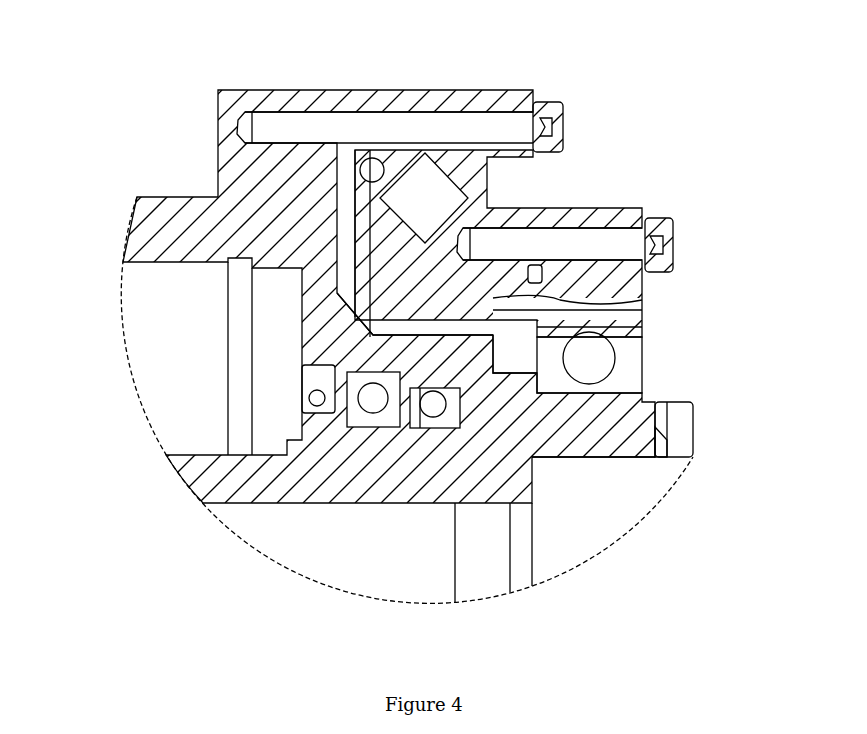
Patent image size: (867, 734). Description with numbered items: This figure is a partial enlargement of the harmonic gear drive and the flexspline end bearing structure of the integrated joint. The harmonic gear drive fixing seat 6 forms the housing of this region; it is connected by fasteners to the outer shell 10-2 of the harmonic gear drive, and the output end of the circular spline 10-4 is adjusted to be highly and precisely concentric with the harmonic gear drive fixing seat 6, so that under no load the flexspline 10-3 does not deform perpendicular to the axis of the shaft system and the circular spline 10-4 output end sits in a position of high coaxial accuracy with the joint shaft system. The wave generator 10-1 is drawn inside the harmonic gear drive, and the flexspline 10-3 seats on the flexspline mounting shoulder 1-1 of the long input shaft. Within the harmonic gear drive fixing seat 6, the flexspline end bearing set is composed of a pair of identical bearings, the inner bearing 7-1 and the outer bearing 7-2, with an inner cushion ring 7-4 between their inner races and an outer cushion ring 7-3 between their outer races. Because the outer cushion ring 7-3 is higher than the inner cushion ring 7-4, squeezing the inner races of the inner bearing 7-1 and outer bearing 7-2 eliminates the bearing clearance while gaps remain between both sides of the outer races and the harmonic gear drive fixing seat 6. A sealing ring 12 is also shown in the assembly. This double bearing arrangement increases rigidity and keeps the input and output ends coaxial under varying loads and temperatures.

The harmonic gear drive fixing seat 6 is at (243, 193).
The outer shell 10-2 is at (433, 100).
The circular spline 10-4 is at (597, 215).
The flexspline 10-3 is at (563, 310).
The wave generator 10-1 is at (628, 328).
The flexspline mounting shoulder 1-1 is at (568, 403).
The inner bearing of the flexspline end bearing set 7-1 is at (370, 420).
The outer bearing of the flexspline end bearing set 7-2 is at (430, 420).
The outer cushion ring of the flexspline end bearing set 7-3 is at (400, 376).
The inner cushion ring of the flexspline end bearing set 7-4 is at (407, 418).
The sealing ring 12 is at (320, 386).